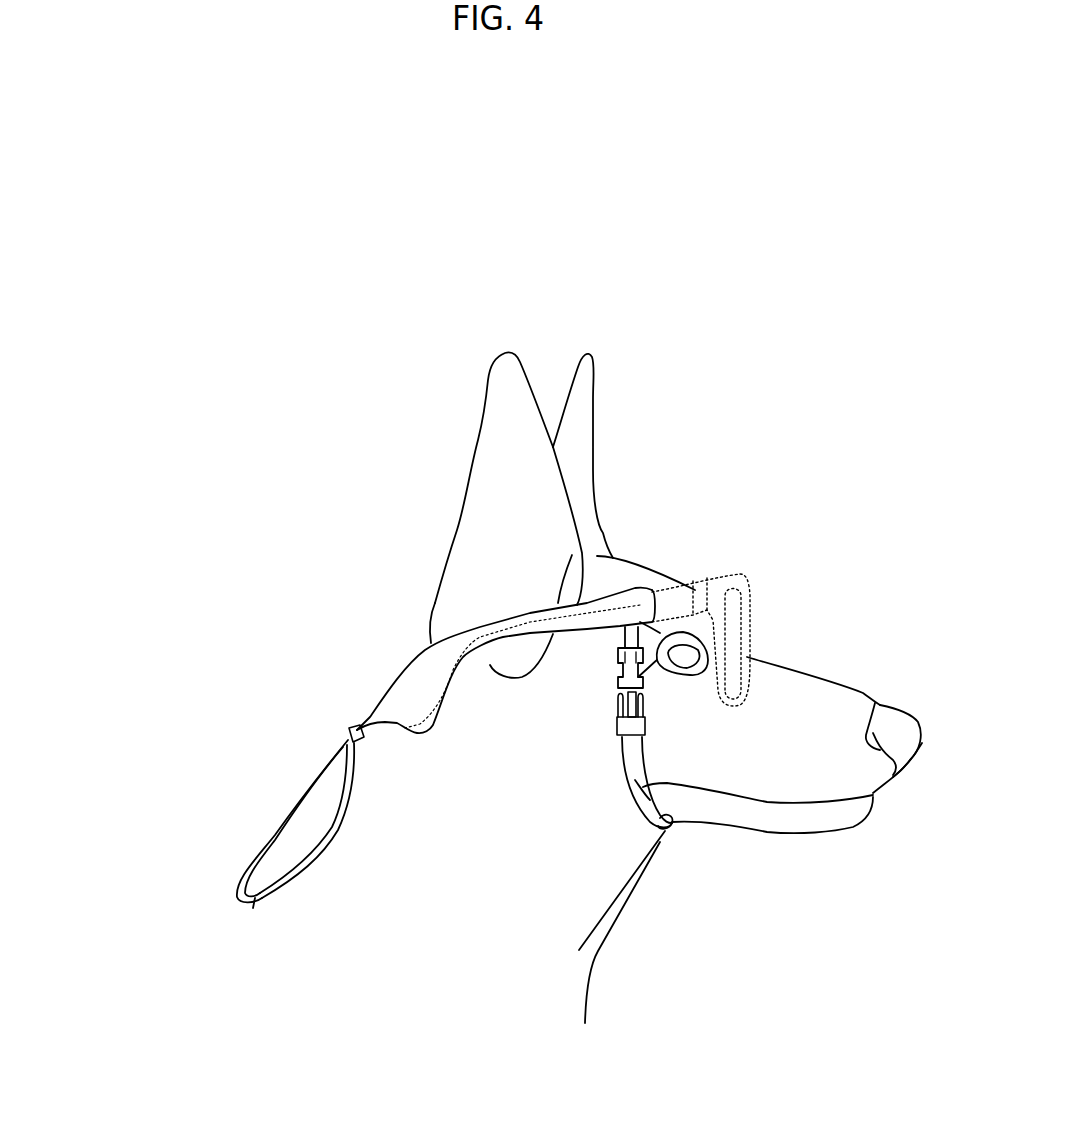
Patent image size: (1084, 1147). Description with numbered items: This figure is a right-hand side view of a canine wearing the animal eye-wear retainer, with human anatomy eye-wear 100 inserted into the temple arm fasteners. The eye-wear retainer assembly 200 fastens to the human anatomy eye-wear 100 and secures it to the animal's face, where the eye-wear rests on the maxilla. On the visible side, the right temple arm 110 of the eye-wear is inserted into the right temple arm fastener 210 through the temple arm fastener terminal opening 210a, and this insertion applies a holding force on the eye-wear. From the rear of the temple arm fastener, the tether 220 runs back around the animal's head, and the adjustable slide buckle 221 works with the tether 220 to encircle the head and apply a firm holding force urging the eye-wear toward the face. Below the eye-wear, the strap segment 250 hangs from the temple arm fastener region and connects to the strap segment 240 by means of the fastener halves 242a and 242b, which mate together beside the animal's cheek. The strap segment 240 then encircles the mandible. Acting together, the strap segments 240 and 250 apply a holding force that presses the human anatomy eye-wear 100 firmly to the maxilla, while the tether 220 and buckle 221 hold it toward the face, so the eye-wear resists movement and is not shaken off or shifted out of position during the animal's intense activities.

The human anatomy eye-wear 100 is at (738, 563).
The human anatomy eye-wear right temple arm 110 is at (693, 588).
The eye-wear retainer assembly 200 is at (503, 607).
The right temple arm fastener 210 is at (600, 597).
The temple arm fastener terminal opening 210a is at (685, 598).
The tether 220 is at (379, 720).
The adjustable slide buckle 221 is at (352, 731).
The strap segment 240 is at (667, 832).
The first half of fastener 242a is at (643, 703).
The second half of fastener 242b is at (640, 666).
The strap segment 250 is at (633, 635).